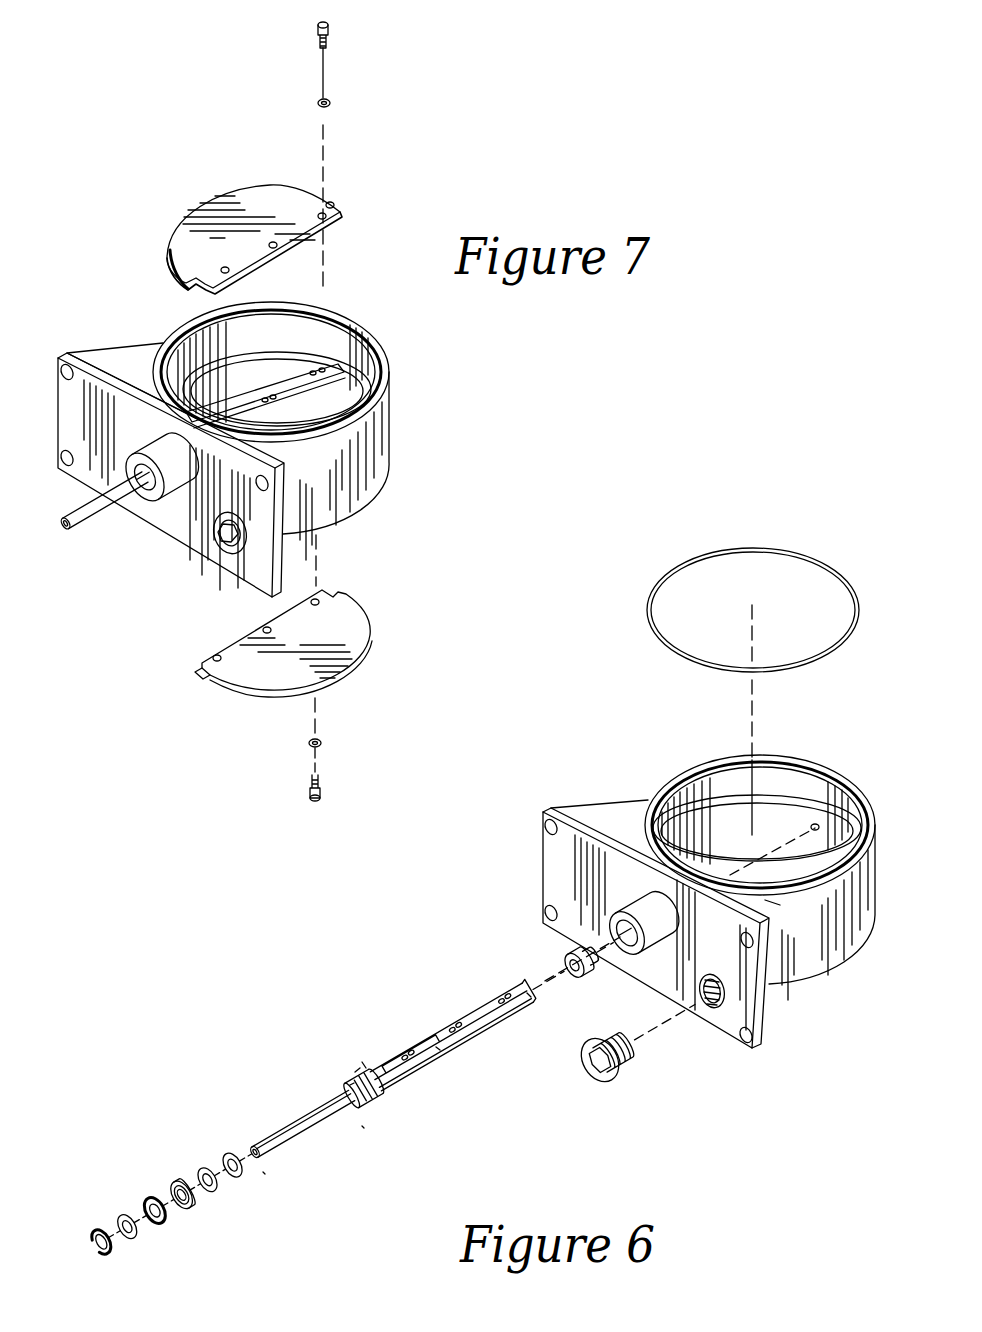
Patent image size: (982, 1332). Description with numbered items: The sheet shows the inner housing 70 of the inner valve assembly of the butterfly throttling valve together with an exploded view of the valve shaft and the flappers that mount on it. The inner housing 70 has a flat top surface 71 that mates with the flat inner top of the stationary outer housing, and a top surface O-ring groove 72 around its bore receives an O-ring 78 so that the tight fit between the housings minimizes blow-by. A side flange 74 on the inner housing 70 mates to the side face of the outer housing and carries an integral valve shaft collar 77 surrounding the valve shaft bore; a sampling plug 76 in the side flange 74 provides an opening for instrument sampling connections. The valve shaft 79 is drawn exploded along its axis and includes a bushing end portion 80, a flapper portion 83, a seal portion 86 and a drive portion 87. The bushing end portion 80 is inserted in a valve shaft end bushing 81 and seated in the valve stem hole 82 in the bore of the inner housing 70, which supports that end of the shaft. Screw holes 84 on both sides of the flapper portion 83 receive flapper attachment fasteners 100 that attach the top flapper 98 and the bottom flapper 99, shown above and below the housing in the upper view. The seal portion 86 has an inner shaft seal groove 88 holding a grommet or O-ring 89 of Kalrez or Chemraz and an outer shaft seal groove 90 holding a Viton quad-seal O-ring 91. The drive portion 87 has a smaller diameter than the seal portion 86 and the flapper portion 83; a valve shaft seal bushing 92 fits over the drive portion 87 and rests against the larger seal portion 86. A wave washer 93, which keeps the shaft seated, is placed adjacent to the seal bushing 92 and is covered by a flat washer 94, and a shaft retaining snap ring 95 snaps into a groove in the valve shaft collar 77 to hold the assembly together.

In FIG. 6, the inner housing 70 is at (556, 804).
In FIG. 6, the flat top surface 71 is at (763, 900).
In FIG. 6, the top surface O-ring groove 72 is at (816, 770).
In FIG. 6, the side flange 74 is at (733, 1003).
In FIG. 6, the sampling plug 76 is at (592, 1083).
In FIG. 6, the valve shaft collar 77 is at (656, 963).
In FIG. 6, the O-ring 78 is at (650, 577).
In FIG. 6, the valve shaft 79 is at (360, 1057).
In FIG. 6, the bushing end portion 80 is at (530, 994).
In FIG. 6, the valve shaft end bushing 81 is at (556, 965).
In FIG. 6, the valve stem hole 82 is at (800, 816).
In FIG. 6, the flapper portion 83 is at (514, 984).
In FIG. 6, the screw holes 84 is at (438, 1048).
In FIG. 6, the seal portion 86 is at (405, 1100).
In FIG. 6, the drive portion 87 is at (362, 1128).
In FIG. 6, the inner shaft seal groove 88 is at (355, 1072).
In FIG. 6, the grommet or O-ring 89 is at (240, 1180).
In FIG. 6, the outer shaft seal groove 90 is at (350, 1085).
In FIG. 6, the quad-seal O-ring 91 is at (203, 1165).
In FIG. 6, the valve shaft seal bushing 92 is at (183, 1210).
In FIG. 6, the wave washer 93 is at (152, 1196).
In FIG. 6, the flat washer 94 is at (133, 1238).
In FIG. 6, the shaft retaining snap ring 95 is at (92, 1228).
In FIG. 7, the top flapper 98 is at (352, 216).
In FIG. 7, the bottom flapper 99 is at (367, 598).
In FIG. 7, the flapper attachment fasteners 100 is at (333, 102).